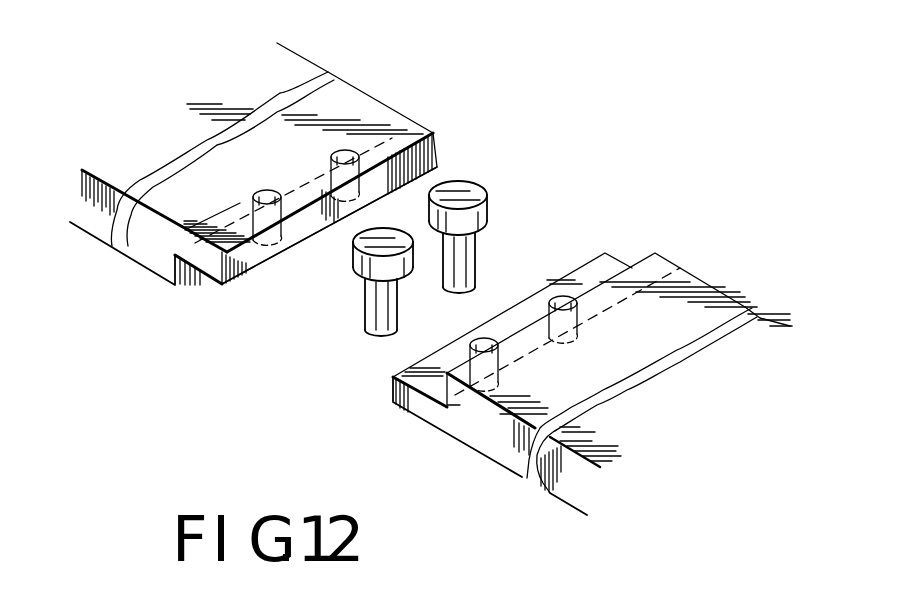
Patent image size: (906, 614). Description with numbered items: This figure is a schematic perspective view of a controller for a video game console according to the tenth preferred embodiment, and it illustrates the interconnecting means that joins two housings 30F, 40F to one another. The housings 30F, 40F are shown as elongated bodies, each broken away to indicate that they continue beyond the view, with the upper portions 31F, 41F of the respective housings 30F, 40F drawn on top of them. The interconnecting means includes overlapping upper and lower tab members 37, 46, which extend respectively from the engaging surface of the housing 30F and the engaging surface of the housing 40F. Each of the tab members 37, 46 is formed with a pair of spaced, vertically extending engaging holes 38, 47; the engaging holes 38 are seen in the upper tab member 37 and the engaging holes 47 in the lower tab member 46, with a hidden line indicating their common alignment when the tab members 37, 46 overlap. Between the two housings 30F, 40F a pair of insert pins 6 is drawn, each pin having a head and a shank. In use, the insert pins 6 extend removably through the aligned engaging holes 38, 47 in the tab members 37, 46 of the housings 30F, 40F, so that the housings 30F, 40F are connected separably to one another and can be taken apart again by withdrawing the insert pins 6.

The housing 30F is at (147, 257).
The upper mould plate 31F is at (350, 92).
The upper tab member 37 is at (437, 147).
The engaging holes 38 is at (256, 222).
The insert pins 6 is at (471, 240).
The housing 40F is at (467, 428).
The upper mould plate 41F is at (662, 278).
The lower tab member 46 is at (608, 262).
The engaging holes 47 is at (487, 343).